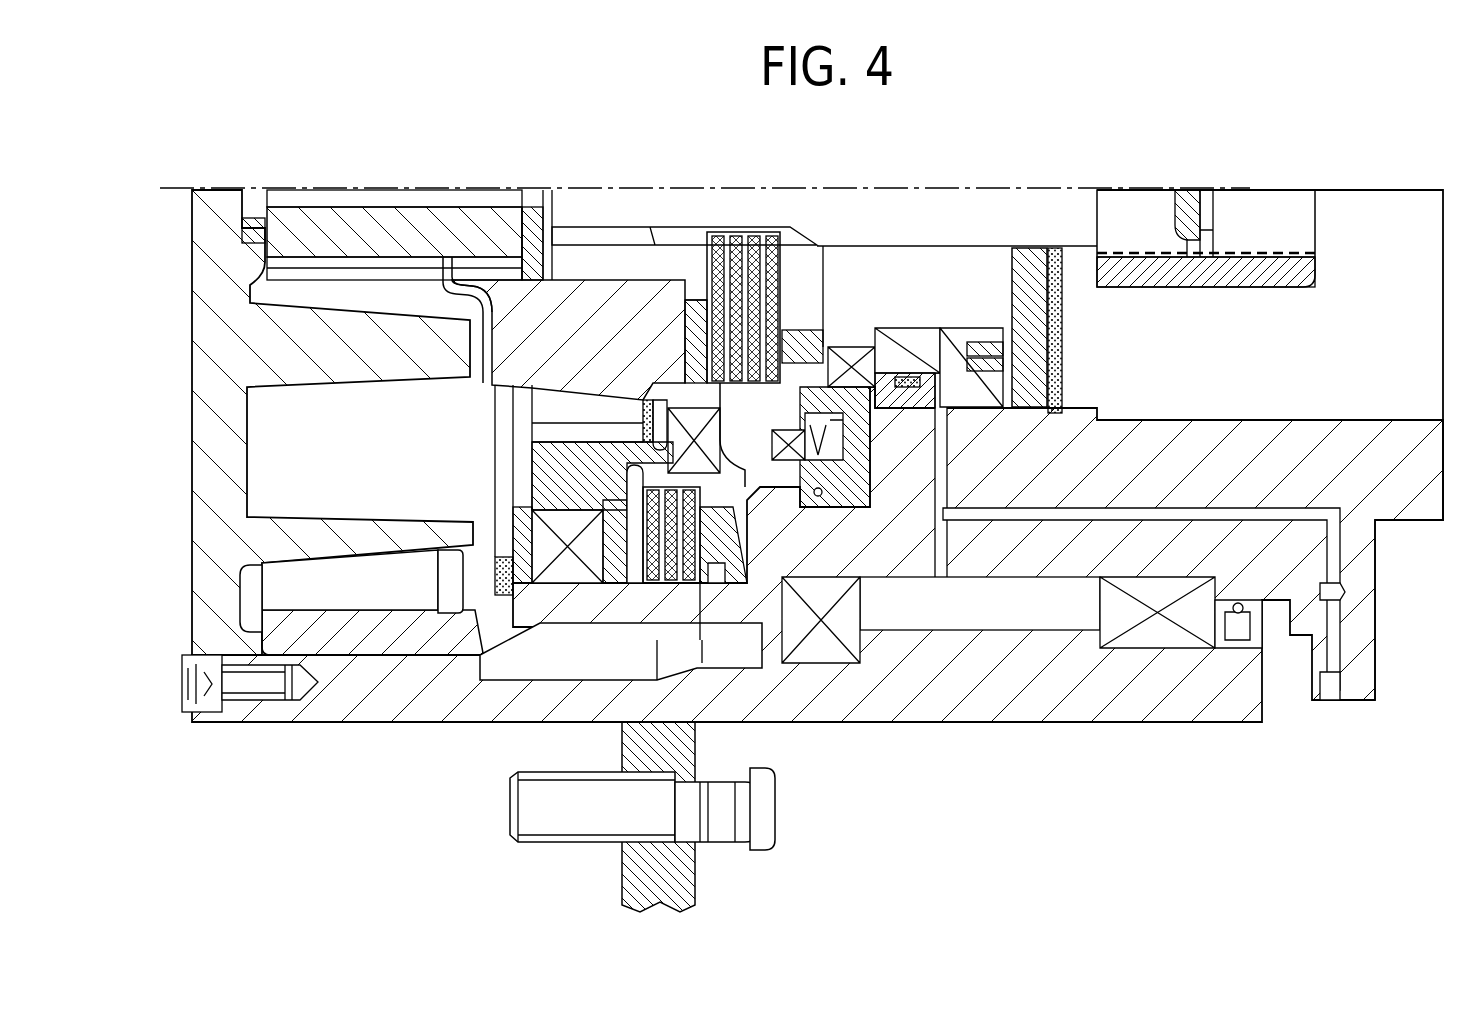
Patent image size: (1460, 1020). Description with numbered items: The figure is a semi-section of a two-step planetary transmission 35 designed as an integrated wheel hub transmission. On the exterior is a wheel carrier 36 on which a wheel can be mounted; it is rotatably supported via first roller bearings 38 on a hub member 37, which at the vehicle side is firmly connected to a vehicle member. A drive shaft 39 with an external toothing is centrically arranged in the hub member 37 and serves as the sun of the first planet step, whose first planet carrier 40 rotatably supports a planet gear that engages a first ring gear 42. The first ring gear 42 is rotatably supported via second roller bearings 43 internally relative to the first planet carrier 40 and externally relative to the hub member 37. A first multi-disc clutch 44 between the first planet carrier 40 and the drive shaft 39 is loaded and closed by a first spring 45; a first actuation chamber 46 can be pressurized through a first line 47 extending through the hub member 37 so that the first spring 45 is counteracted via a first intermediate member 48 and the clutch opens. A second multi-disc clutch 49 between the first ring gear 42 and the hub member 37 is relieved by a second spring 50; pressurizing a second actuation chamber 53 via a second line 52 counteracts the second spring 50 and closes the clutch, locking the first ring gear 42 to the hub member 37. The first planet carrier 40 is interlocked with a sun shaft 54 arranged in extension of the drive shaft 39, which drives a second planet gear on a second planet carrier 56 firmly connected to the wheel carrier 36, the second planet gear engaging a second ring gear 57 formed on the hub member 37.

The two-step planetary transmission 35 is at (1412, 166).
The wheel carrier 36 is at (996, 702).
The hub member 37 is at (1380, 496).
The first roller bearings 38 is at (1098, 608).
The drive shaft 39 is at (1140, 206).
The first planet carrier 40 is at (612, 290).
The first ring gear 42 is at (572, 462).
The second roller bearings 43 is at (540, 530).
The first multi-disc clutch 44 is at (790, 283).
The first spring 45 is at (990, 342).
The first actuation chamber 46 is at (940, 373).
The first line 47 is at (1055, 515).
The first intermediate member 48 is at (904, 342).
The second multi-disc clutch 49 is at (640, 575).
The second spring 50 is at (812, 498).
The second line 52 is at (850, 485).
The second actuation chamber 53 is at (835, 610).
The sun shaft 54 is at (331, 220).
The second planet carrier 56 is at (212, 338).
The second ring gear 57 is at (372, 618).